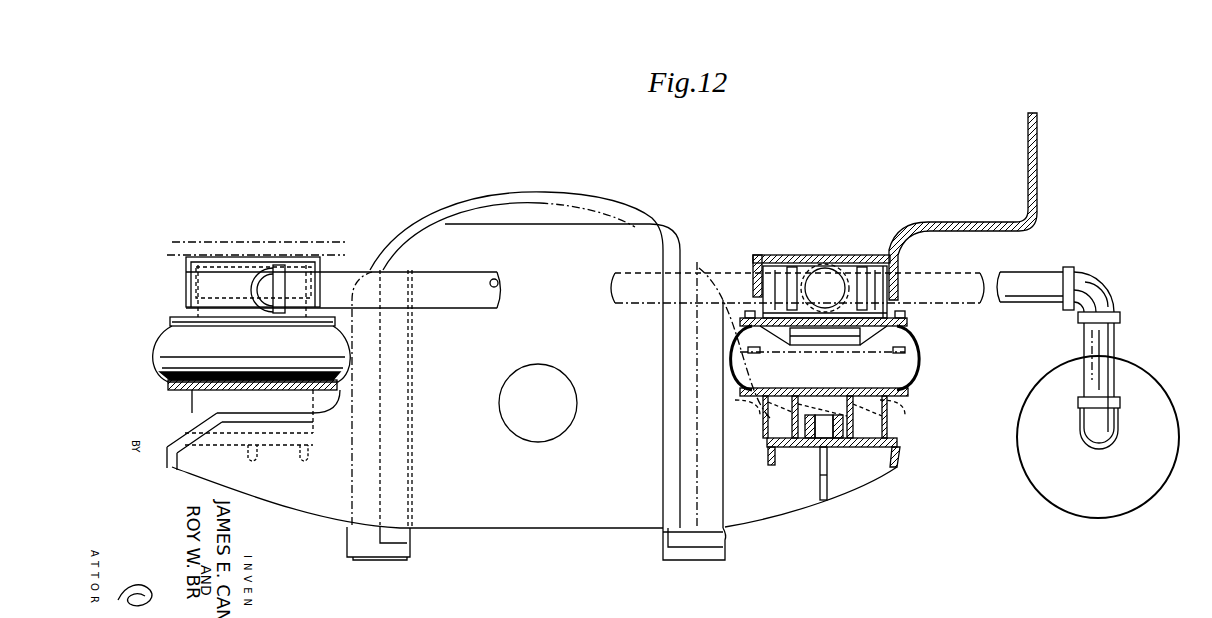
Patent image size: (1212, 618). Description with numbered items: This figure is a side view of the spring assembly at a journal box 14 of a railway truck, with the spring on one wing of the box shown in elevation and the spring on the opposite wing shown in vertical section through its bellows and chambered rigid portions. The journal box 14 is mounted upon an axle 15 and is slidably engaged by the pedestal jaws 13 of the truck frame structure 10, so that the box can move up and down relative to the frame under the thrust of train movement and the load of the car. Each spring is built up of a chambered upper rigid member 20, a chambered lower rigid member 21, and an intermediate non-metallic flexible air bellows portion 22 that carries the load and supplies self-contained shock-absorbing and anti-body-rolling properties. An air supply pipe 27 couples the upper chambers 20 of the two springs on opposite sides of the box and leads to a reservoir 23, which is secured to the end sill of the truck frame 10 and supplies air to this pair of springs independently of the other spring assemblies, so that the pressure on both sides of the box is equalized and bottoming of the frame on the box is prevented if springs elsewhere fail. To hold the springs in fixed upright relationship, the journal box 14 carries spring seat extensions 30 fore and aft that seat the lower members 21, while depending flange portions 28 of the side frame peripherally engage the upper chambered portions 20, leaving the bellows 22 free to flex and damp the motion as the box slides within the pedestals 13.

The truck frame structure 10 is at (1038, 194).
The pedestal jaws 13 is at (383, 552).
The journal box 14 is at (577, 514).
The axle 15 is at (567, 378).
The upper rigid member 20 is at (200, 303).
The lower rigid member 21 is at (895, 413).
The air bellows portion 22 is at (173, 360).
The reservoir 23 is at (1022, 398).
The air supply pipe 27 is at (442, 278).
The depending flange portion 28 is at (186, 276).
The spring seat extension 30 is at (900, 455).